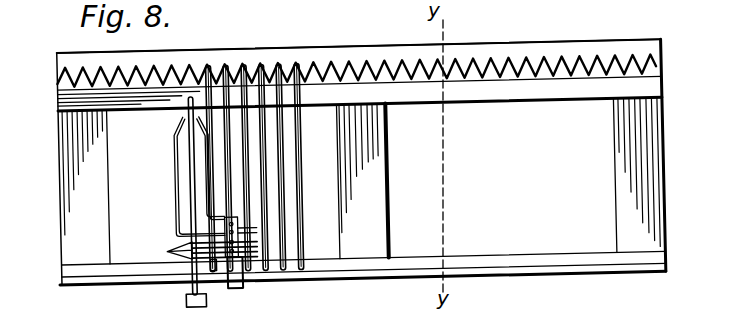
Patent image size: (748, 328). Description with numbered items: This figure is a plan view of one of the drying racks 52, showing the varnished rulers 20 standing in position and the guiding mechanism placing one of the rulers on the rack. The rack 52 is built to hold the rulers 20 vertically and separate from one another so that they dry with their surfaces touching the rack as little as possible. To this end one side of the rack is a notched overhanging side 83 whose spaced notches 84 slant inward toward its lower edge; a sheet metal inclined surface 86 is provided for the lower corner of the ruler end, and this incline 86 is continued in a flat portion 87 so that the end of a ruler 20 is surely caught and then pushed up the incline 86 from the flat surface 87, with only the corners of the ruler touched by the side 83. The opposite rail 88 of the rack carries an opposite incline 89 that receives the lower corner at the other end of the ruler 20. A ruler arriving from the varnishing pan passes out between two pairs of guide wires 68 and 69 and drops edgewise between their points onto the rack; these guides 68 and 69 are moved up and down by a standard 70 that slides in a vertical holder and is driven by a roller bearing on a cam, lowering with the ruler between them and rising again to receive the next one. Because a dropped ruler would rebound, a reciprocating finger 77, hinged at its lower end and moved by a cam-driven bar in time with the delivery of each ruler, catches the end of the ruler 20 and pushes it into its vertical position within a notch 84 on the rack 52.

The rulers 20 is at (192, 198).
The drying racks 52 is at (668, 192).
The guide wires 68 is at (190, 257).
The guide wires 69 is at (212, 160).
The standard 70 is at (243, 287).
The finger 77 is at (206, 305).
The notched overhanging side 83 is at (673, 64).
The spaced notches 84 is at (627, 68).
The sheet metal inclined surface 86 is at (658, 85).
The flat portion 87 is at (657, 103).
The opposite rail 88 is at (643, 281).
The opposite incline 89 is at (657, 272).